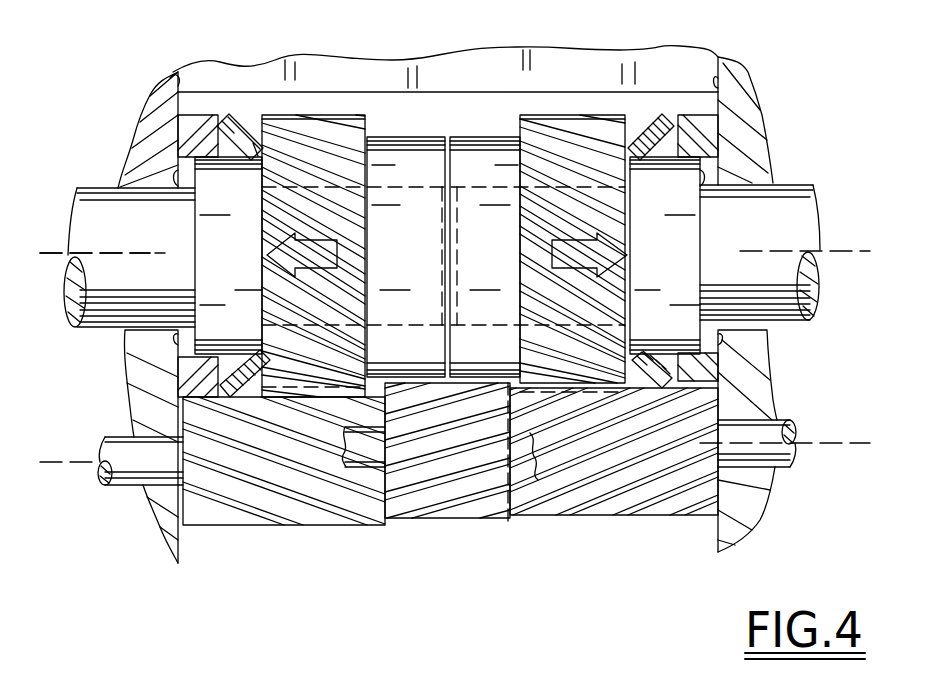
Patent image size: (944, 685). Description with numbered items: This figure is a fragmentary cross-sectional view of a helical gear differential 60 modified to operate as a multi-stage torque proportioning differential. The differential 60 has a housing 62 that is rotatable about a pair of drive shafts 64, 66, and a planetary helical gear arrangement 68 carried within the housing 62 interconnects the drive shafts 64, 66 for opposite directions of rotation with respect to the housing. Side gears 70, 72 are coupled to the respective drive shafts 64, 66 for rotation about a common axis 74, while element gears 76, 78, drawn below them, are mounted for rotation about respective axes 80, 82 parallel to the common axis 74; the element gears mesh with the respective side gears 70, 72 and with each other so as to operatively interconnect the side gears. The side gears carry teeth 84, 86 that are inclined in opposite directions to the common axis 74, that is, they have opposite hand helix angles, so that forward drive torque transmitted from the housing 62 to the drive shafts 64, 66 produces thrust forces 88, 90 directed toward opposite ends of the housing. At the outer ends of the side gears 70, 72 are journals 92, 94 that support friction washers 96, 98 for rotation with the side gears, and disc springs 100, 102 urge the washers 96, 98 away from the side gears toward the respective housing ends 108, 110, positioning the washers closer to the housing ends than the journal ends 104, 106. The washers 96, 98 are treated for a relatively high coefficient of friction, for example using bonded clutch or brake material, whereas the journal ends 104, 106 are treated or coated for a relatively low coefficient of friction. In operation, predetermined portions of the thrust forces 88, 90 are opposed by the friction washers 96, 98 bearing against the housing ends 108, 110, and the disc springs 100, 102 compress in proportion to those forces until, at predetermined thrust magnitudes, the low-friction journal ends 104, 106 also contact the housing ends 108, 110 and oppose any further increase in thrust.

The differential 60 is at (157, 58).
The housing 62 is at (230, 72).
The drive shaft 64 is at (115, 227).
The drive shaft 66 is at (763, 227).
The planetary helical gear arrangement 68 is at (665, 70).
The side gear 70 is at (330, 171).
The side gear 72 is at (598, 171).
The common axis 74 is at (97, 258).
The element gear 76 is at (258, 520).
The element gear 78 is at (680, 500).
The axis 80 is at (42, 462).
The axis 82 is at (865, 448).
The teeth 84 is at (335, 318).
The teeth 86 is at (548, 324).
The thrust force 88 is at (302, 255).
The thrust force 90 is at (589, 255).
The journal 92 is at (212, 160).
The journal 94 is at (682, 160).
The friction washer 96 is at (195, 135).
The friction washer 98 is at (725, 137).
The disc spring 100 is at (248, 122).
The disc spring 102 is at (655, 120).
The journal end 104 is at (176, 176).
The journal end 106 is at (745, 178).
The housing end 108 is at (173, 78).
The housing end 110 is at (725, 80).